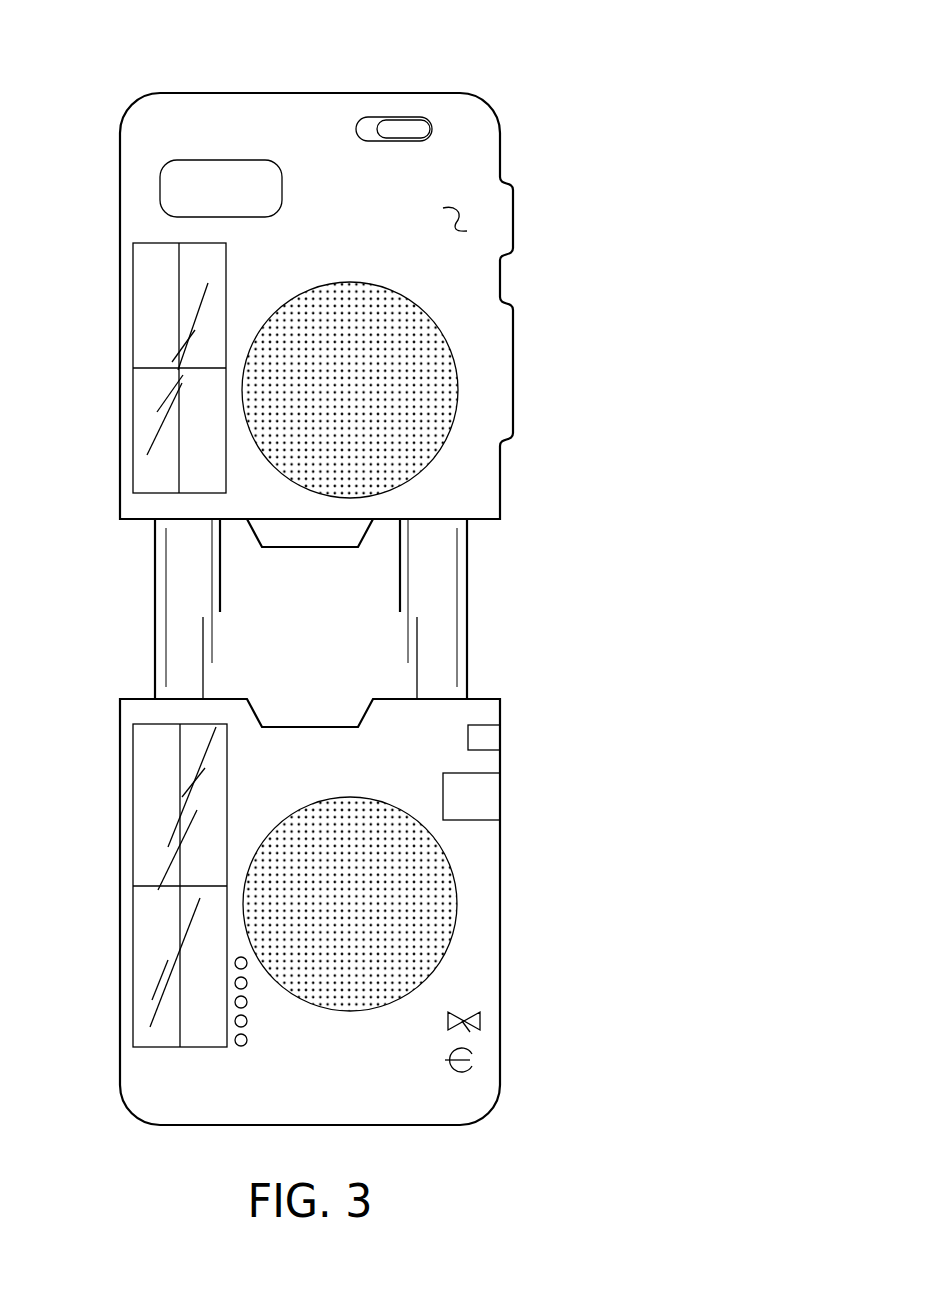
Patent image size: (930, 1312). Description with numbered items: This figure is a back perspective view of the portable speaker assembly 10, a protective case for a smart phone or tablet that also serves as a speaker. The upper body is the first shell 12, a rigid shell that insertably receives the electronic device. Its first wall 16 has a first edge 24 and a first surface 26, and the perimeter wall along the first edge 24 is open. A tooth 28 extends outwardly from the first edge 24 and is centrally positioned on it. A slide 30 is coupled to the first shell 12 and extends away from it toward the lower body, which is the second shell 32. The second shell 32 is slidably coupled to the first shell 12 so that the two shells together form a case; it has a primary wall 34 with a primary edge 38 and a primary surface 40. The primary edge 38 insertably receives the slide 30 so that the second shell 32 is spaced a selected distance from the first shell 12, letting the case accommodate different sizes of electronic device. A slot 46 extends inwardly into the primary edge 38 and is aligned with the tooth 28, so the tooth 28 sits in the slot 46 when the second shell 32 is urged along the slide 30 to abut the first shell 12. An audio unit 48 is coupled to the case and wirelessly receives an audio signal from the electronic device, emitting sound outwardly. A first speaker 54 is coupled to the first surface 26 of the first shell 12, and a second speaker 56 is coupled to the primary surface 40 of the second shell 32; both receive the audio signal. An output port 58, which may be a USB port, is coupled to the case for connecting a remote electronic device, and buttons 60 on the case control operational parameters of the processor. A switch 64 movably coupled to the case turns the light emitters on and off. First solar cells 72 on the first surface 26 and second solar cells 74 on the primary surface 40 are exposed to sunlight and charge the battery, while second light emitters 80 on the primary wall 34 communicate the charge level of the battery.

The portable speaker assembly 10 is at (520, 130).
The first shell 12 is at (485, 86).
The first wall 16 is at (303, 110).
The first edge 24 is at (478, 519).
The first surface 26 is at (462, 212).
The tooth 28 is at (283, 548).
The slide 30 is at (467, 588).
The second shell 32 is at (516, 1088).
The primary wall 34 is at (482, 940).
The primary edge 38 is at (137, 698).
The primary surface 40 is at (413, 1093).
The slot 46 is at (322, 704).
The audio unit 48 is at (470, 353).
The first speaker 54 is at (443, 442).
The second speaker 56 is at (457, 905).
The output port 58 is at (500, 797).
The buttons 60 is at (478, 1058).
The switch 64 is at (403, 125).
The first solar cells 72 is at (153, 245).
The second solar cells 74 is at (133, 938).
The second light emitters 80 is at (235, 984).